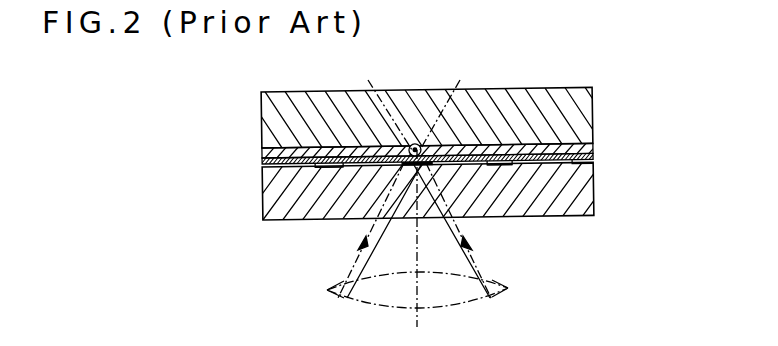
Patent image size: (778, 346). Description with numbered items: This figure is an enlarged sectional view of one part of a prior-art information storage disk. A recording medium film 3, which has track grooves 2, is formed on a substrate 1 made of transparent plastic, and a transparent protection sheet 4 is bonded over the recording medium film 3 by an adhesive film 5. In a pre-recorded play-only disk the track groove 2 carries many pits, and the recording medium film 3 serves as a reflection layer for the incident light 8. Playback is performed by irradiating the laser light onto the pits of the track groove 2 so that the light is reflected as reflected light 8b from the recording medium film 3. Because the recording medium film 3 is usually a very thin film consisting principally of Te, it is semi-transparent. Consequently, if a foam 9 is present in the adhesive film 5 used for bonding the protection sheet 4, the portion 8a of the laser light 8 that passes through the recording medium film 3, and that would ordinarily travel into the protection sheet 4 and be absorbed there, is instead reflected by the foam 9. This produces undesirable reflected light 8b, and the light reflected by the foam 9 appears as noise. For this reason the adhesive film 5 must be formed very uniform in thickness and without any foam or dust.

The substrate 1 is at (585, 203).
The track grooves 2 is at (315, 168).
The recording medium film 3 is at (597, 163).
The transparent protection sheet 4 is at (560, 98).
The adhesive film 5 is at (587, 148).
The incident light 8 is at (330, 281).
The portion of the laser light passing through the recording medium film 8a is at (393, 123).
The reflected light 8b is at (357, 263).
The foam 9 is at (415, 146).